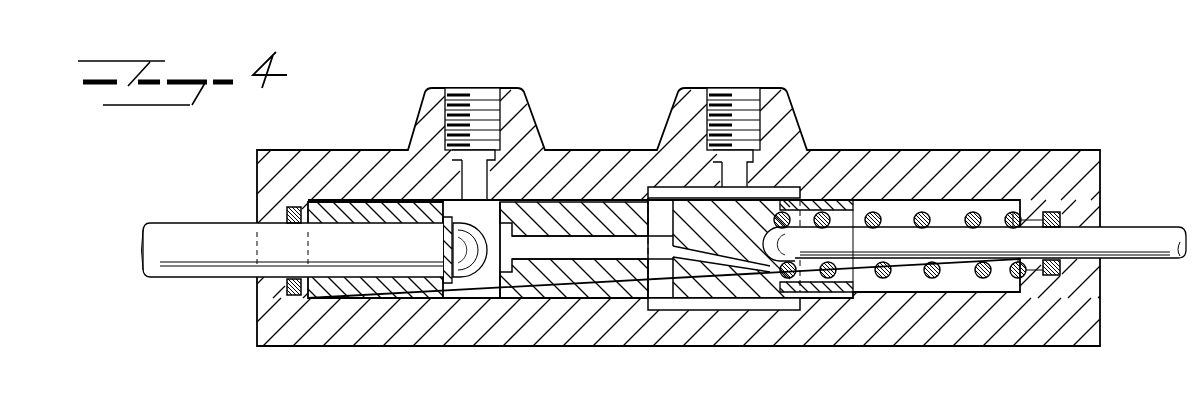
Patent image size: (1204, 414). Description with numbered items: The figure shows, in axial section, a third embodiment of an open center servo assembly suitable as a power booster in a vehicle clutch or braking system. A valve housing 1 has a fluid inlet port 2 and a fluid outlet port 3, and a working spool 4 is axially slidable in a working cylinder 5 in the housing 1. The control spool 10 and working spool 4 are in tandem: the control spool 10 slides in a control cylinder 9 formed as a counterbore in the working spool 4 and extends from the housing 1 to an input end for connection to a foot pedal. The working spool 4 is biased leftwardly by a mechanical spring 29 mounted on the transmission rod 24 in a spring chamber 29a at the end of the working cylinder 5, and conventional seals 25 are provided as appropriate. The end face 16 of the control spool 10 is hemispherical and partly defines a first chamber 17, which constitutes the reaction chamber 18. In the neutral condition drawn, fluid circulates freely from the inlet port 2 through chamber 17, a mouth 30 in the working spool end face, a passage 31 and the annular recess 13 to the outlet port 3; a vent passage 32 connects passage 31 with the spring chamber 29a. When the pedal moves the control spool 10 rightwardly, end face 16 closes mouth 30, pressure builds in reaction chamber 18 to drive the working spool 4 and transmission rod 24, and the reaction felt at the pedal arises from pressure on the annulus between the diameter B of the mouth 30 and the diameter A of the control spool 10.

The valve housing 1 is at (310, 148).
The fluid inlet port 2 is at (482, 108).
The fluid outlet port 3 is at (742, 108).
The working spool 4 is at (566, 284).
The working cylinder 5 is at (897, 284).
The control cylinder 9 is at (343, 278).
The control spool 10 is at (397, 262).
The annular recess 13 is at (676, 192).
The end face 16 is at (493, 222).
The first chamber 17 is at (483, 287).
The reaction chamber 18 is at (463, 298).
The transmission rod 24 is at (1130, 236).
The pressure seals and/or ring seals 25 is at (288, 290).
The mechanical spring 29 is at (982, 280).
The spring chamber 29a is at (946, 205).
The mouth 30 is at (553, 148).
The passage 31 is at (613, 250).
The vent passage 32 is at (752, 275).
The diameter of the control spool A is at (335, 370).
The diameter of the mouth B is at (588, 392).